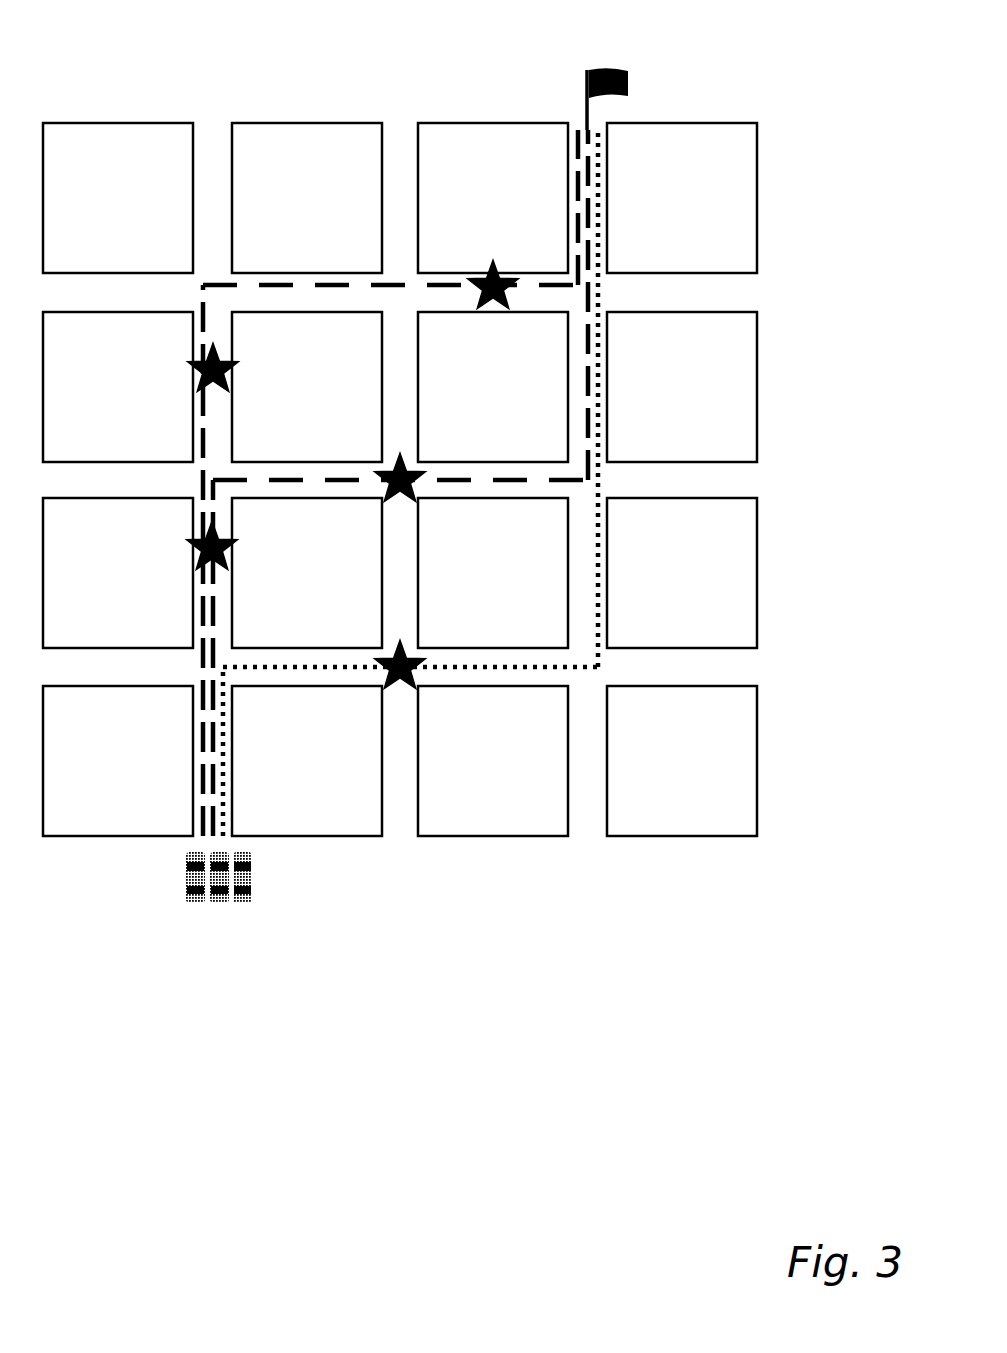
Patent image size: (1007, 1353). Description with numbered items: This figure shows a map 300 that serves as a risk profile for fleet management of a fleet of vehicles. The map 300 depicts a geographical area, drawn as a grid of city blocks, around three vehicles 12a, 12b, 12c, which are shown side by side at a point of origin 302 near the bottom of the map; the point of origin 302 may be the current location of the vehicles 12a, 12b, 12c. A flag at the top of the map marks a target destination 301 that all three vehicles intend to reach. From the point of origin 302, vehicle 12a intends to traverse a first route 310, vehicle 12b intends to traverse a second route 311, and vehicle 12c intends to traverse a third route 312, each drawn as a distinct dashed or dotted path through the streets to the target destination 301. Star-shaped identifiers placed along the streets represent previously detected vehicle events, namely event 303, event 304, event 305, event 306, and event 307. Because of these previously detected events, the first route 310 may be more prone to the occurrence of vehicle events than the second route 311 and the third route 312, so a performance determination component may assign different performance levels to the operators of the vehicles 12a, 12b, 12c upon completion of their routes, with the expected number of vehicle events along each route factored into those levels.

The map 300 is at (847, 50).
The target destination 301 is at (586, 99).
The point of origin 302 is at (210, 828).
The event 303 is at (196, 550).
The event 304 is at (193, 372).
The event 305 is at (481, 312).
The event 306 is at (379, 490).
The event 307 is at (387, 680).
The first route 310 is at (201, 737).
The second route 311 is at (213, 482).
The third route 312 is at (240, 666).
The vehicle 12a is at (196, 915).
The vehicle 12b is at (219, 915).
The vehicle 12c is at (243, 915).